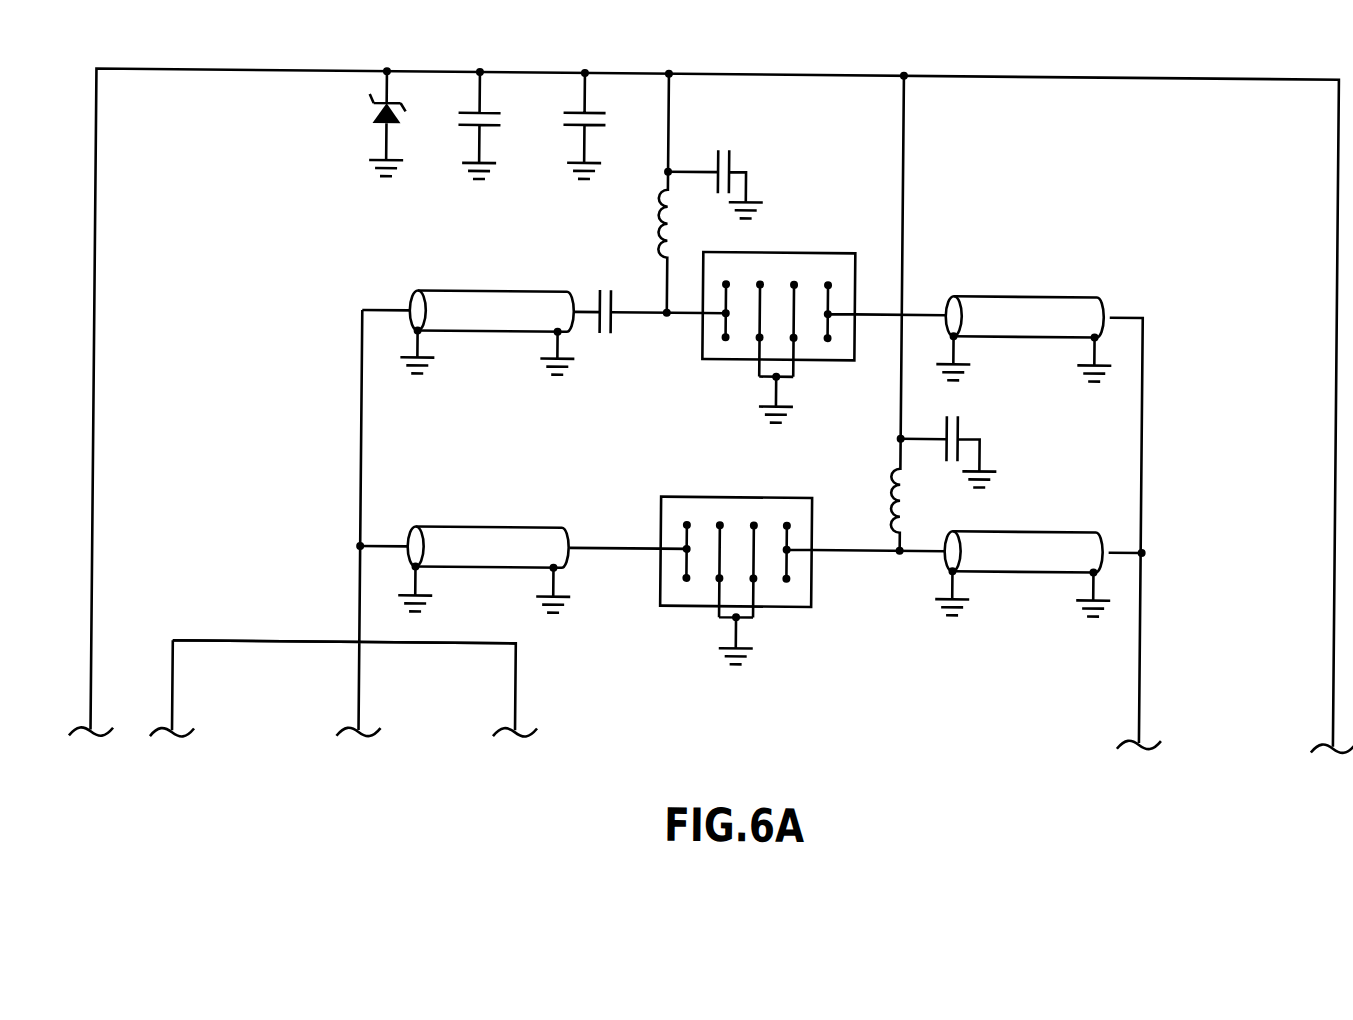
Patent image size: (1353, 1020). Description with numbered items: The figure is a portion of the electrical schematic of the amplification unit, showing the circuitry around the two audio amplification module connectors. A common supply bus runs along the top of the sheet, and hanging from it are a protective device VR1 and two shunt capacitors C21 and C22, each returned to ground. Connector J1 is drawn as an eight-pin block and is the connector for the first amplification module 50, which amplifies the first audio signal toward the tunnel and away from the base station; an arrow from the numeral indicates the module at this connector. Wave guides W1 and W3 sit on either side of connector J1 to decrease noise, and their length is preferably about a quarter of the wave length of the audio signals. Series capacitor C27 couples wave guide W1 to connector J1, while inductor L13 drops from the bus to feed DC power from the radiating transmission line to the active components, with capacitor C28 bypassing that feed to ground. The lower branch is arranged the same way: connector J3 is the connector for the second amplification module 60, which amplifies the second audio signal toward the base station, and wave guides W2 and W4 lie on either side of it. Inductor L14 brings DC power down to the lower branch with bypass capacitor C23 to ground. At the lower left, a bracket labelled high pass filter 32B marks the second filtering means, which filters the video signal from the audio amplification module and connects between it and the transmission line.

The voltage regulator zener diode VR1 is at (357, 121).
The capacitor C21 is at (459, 123).
The capacitor C22 is at (562, 123).
The capacitor C28 is at (731, 179).
The inductor L13 is at (636, 191).
The capacitor C27 is at (605, 294).
The wave guide W1 is at (487, 315).
The connector J1 is at (779, 320).
The first amplification module 50 is at (842, 252).
The wave guide W3 is at (1024, 324).
The capacitor C23 is at (959, 446).
The inductor L14 is at (870, 311).
The wave guide W2 is at (484, 550).
The connector J3 is at (737, 562).
The second amplification module 60 is at (783, 618).
The wave guide W4 is at (1023, 558).
The high pass filter 32B is at (258, 638).